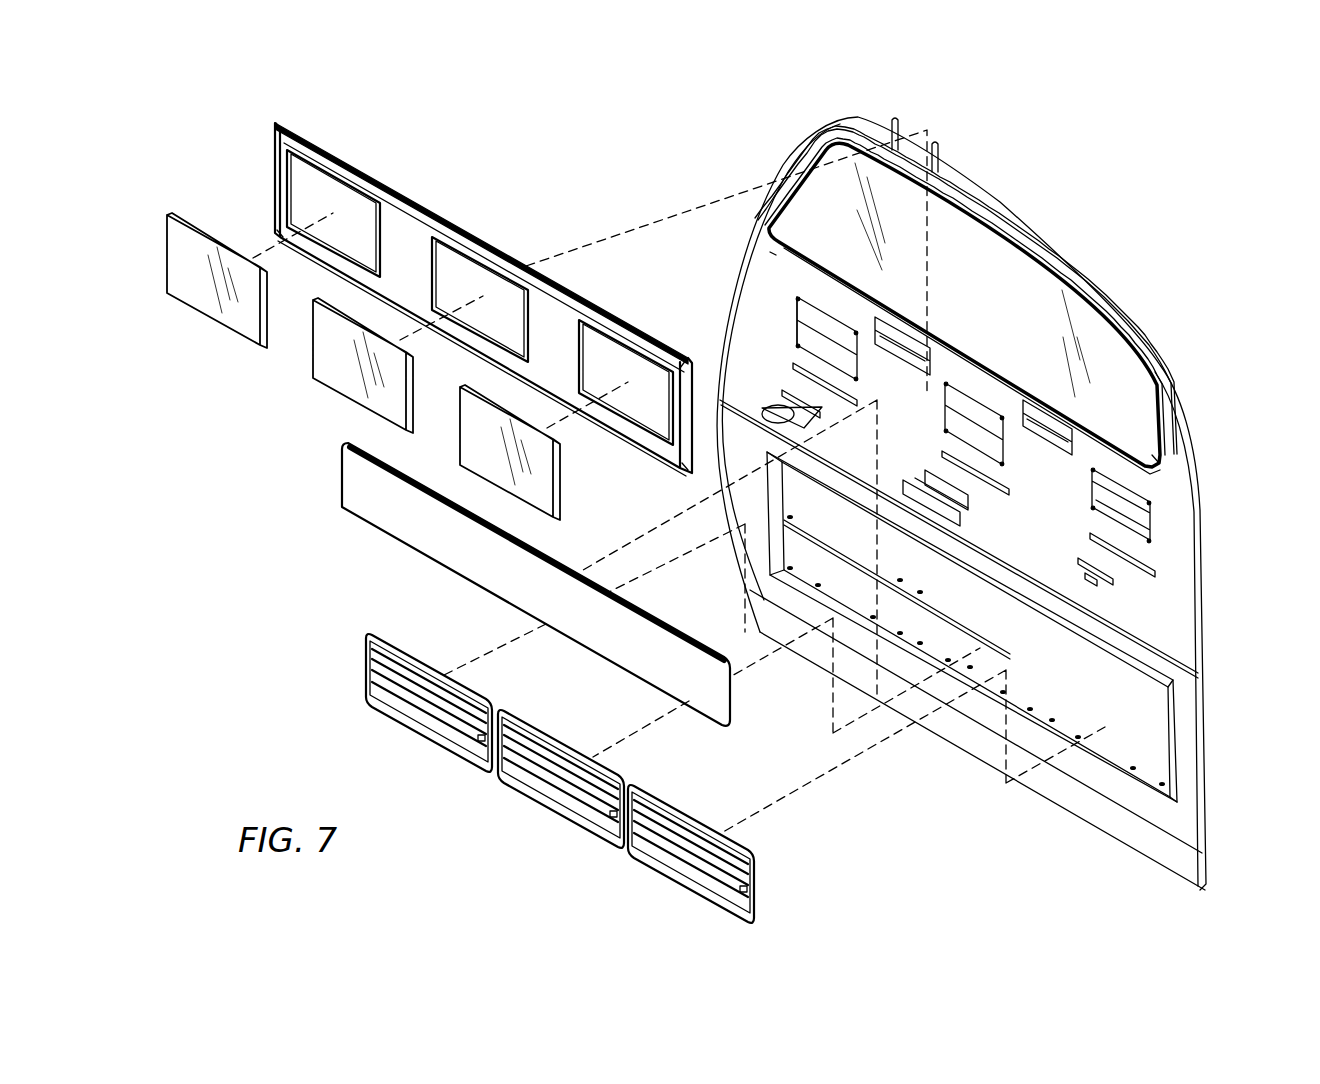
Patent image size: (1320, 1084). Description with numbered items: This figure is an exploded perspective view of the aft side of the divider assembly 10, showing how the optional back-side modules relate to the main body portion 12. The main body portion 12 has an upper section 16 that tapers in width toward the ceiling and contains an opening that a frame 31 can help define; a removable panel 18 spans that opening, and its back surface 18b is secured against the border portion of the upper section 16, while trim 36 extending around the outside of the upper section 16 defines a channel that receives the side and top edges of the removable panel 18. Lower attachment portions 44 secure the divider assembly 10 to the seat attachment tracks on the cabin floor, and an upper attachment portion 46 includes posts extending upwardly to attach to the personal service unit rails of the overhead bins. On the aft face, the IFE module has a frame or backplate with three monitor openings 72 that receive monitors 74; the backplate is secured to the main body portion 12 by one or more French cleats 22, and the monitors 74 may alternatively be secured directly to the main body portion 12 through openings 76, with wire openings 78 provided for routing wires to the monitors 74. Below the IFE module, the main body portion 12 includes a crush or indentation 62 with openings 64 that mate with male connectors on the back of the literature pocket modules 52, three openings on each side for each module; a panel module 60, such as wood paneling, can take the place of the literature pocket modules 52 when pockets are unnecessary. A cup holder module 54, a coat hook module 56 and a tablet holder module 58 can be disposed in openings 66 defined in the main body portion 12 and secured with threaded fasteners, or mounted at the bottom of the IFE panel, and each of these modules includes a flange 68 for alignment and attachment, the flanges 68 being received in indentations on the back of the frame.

The divider assembly 10 is at (1160, 220).
The main body portion 12 is at (1190, 765).
The upper section 16 is at (1173, 460).
The removable panel 18 is at (1000, 233).
The back surface of removable panel 18b is at (1022, 317).
The French cleat 22 is at (893, 330).
The frame 31 is at (1152, 455).
The trim 36 is at (1117, 311).
The lower attachment portions 44 is at (882, 703).
The upper attachment portion 46 is at (940, 152).
The literature pocket modules 52 is at (418, 718).
The cup holder module 54 is at (776, 405).
The coat hook module 56 is at (1088, 580).
The tablet holder module 58 is at (940, 510).
The panel module 60 is at (358, 500).
The indentation 62 is at (1120, 762).
The openings 64 is at (1052, 668).
The openings 66 is at (857, 400).
The flange 68 is at (790, 392).
The monitor openings 72 is at (366, 233).
The monitors 74 is at (199, 276).
The openings 76 is at (797, 345).
The wire openings 78 is at (808, 300).